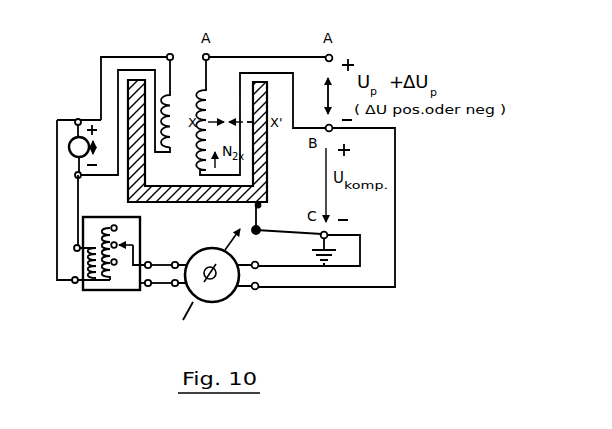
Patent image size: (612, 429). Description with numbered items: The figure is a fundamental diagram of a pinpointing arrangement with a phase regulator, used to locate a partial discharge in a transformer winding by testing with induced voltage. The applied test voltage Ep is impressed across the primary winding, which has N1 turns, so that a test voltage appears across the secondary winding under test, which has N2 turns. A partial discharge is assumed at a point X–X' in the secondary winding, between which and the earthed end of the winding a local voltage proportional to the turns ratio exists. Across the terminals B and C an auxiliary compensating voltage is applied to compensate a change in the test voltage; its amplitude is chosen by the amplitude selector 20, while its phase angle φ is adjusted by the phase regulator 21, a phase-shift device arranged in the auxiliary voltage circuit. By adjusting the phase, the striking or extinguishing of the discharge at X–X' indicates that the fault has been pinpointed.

The amplitude selector 20 is at (99, 283).
The phase regulator 21 is at (224, 292).
The primary winding turns N1 is at (175, 104).
The secondary winding turns N2 is at (260, 117).
The applied test voltage Ep is at (91, 145).